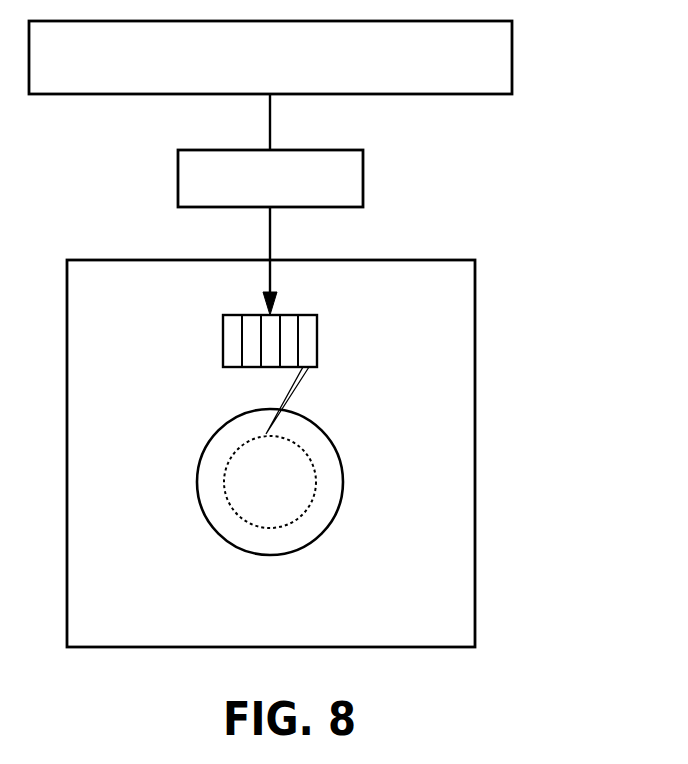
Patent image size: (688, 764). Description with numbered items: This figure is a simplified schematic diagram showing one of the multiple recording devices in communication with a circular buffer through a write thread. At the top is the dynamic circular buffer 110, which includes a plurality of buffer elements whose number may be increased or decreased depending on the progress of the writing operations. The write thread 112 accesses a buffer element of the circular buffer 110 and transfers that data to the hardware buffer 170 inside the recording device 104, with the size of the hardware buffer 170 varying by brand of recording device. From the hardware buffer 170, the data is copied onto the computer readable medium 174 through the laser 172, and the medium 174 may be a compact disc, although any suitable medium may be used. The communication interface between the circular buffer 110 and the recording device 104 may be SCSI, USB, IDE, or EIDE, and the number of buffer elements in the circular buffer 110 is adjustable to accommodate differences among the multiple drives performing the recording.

The dynamic circular buffer 110 is at (512, 62).
The write thread 112 is at (363, 180).
The recording device 104 is at (475, 407).
The hardware buffer 170 is at (296, 315).
The laser 172 is at (296, 393).
The computer readable medium 174 is at (317, 538).